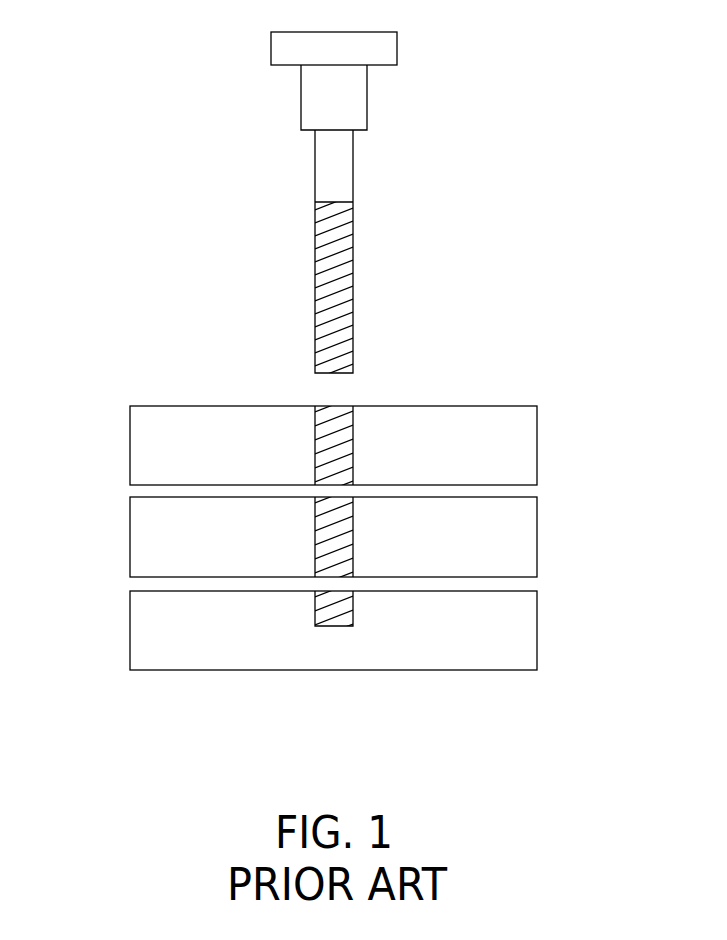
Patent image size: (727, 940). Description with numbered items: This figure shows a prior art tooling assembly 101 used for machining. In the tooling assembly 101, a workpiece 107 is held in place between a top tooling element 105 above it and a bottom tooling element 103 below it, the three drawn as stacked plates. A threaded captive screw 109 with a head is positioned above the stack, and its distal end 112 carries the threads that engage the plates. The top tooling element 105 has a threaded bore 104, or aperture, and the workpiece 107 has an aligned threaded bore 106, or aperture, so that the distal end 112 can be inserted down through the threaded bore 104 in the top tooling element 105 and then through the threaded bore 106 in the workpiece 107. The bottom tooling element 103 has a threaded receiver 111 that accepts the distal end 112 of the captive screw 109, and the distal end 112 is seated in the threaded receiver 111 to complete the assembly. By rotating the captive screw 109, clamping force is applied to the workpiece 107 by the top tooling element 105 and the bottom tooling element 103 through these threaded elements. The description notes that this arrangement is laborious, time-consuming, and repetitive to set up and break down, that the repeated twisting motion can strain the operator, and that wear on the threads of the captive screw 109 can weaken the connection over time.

The tooling assembly 101 is at (166, 69).
The bottom tooling element 103 is at (525, 630).
The threaded bore 104 is at (313, 457).
The top tooling element 105 is at (525, 447).
The threaded bore 106 is at (315, 540).
The workpiece 107 is at (525, 539).
The threaded captive screw 109 is at (345, 98).
The threaded receiver 111 is at (316, 619).
The distal end 112 is at (340, 373).